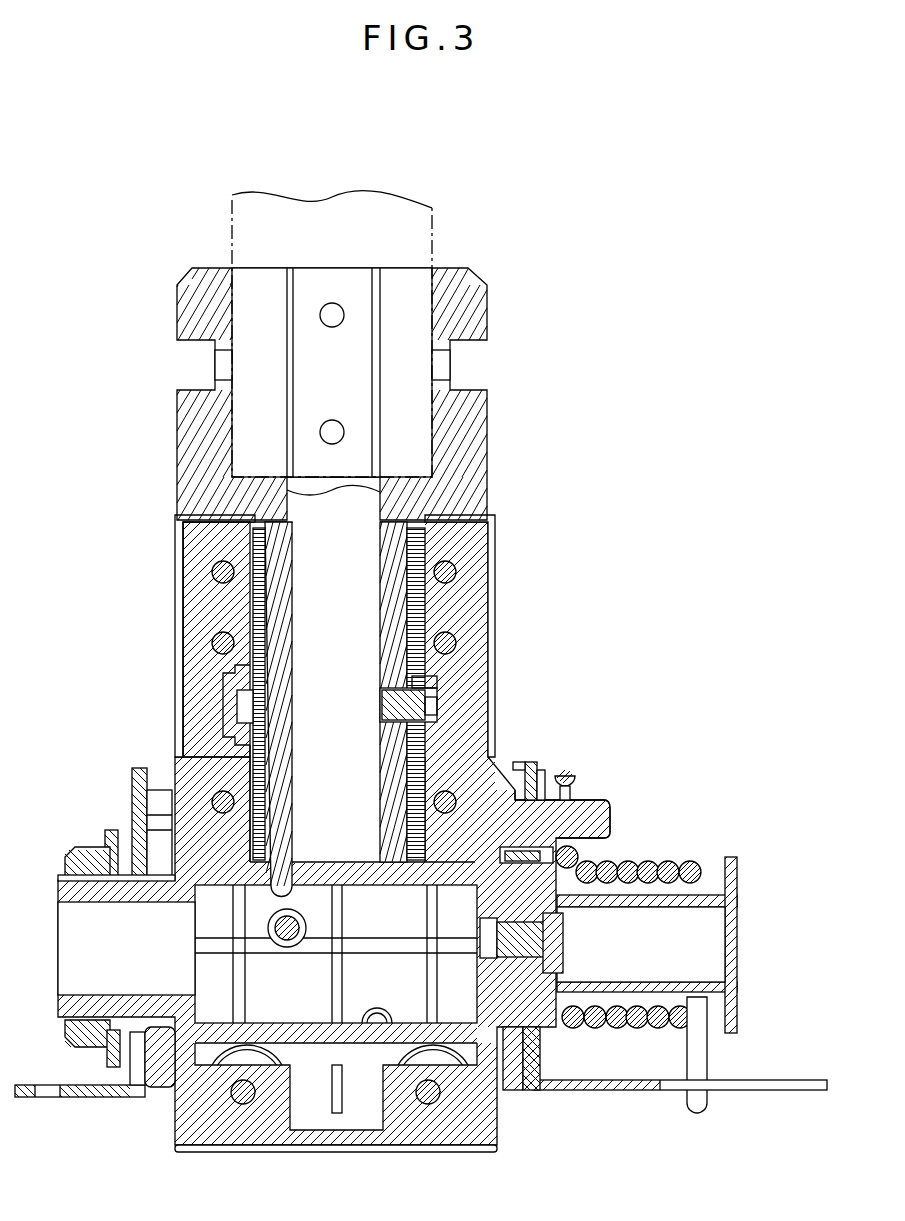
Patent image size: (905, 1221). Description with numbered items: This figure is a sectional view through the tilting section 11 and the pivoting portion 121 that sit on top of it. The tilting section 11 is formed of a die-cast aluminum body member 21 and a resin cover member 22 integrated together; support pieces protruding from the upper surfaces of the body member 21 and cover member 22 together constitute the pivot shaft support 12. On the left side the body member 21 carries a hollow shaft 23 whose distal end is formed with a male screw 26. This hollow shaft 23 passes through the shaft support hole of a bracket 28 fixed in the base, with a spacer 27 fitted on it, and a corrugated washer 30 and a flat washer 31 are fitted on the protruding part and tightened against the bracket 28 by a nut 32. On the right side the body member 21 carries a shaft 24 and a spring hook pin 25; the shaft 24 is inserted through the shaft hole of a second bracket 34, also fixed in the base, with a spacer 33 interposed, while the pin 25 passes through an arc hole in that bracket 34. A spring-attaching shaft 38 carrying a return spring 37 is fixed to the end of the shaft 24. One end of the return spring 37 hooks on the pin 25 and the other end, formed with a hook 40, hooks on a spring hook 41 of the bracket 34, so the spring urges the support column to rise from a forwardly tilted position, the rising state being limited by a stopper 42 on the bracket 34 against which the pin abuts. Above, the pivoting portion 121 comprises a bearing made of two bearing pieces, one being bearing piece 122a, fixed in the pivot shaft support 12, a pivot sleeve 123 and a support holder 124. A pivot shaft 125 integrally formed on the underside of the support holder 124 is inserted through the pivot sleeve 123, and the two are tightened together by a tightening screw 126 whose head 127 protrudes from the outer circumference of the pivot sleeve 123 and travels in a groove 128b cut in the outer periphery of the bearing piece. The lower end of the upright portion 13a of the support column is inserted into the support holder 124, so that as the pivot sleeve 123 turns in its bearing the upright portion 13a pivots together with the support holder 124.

The tilting section 11 is at (190, 1160).
The pivot shaft support 12 is at (455, 592).
The upright portion 13a is at (437, 246).
The body member 21 is at (238, 1142).
The cover member 22 is at (360, 975).
The hollow shaft 23 is at (103, 952).
The shaft 24 is at (558, 1030).
The spring hook pin 25 is at (608, 808).
The male screw 26 is at (78, 882).
The spacer 27 is at (170, 1087).
The bracket 28 is at (92, 1097).
The corrugated washer 30 is at (122, 830).
The flat washer 31 is at (107, 1060).
The nut 32 is at (75, 852).
The spacer 33 is at (505, 1085).
The bracket 34 is at (620, 1088).
The return spring 37 is at (668, 862).
The spring-attaching shaft 38 is at (697, 938).
The hook 40 is at (697, 1088).
The spring hook 41 is at (707, 1092).
The stopper 42 is at (540, 778).
The pivoting portion 121 is at (305, 355).
The bearing piece 122a is at (240, 598).
The pivot sleeve 123 is at (250, 752).
The support holder 124 is at (467, 322).
The pivot shaft 125 is at (277, 582).
The tightening screw 126 is at (432, 708).
The head 127 is at (458, 688).
The groove 128b is at (240, 700).